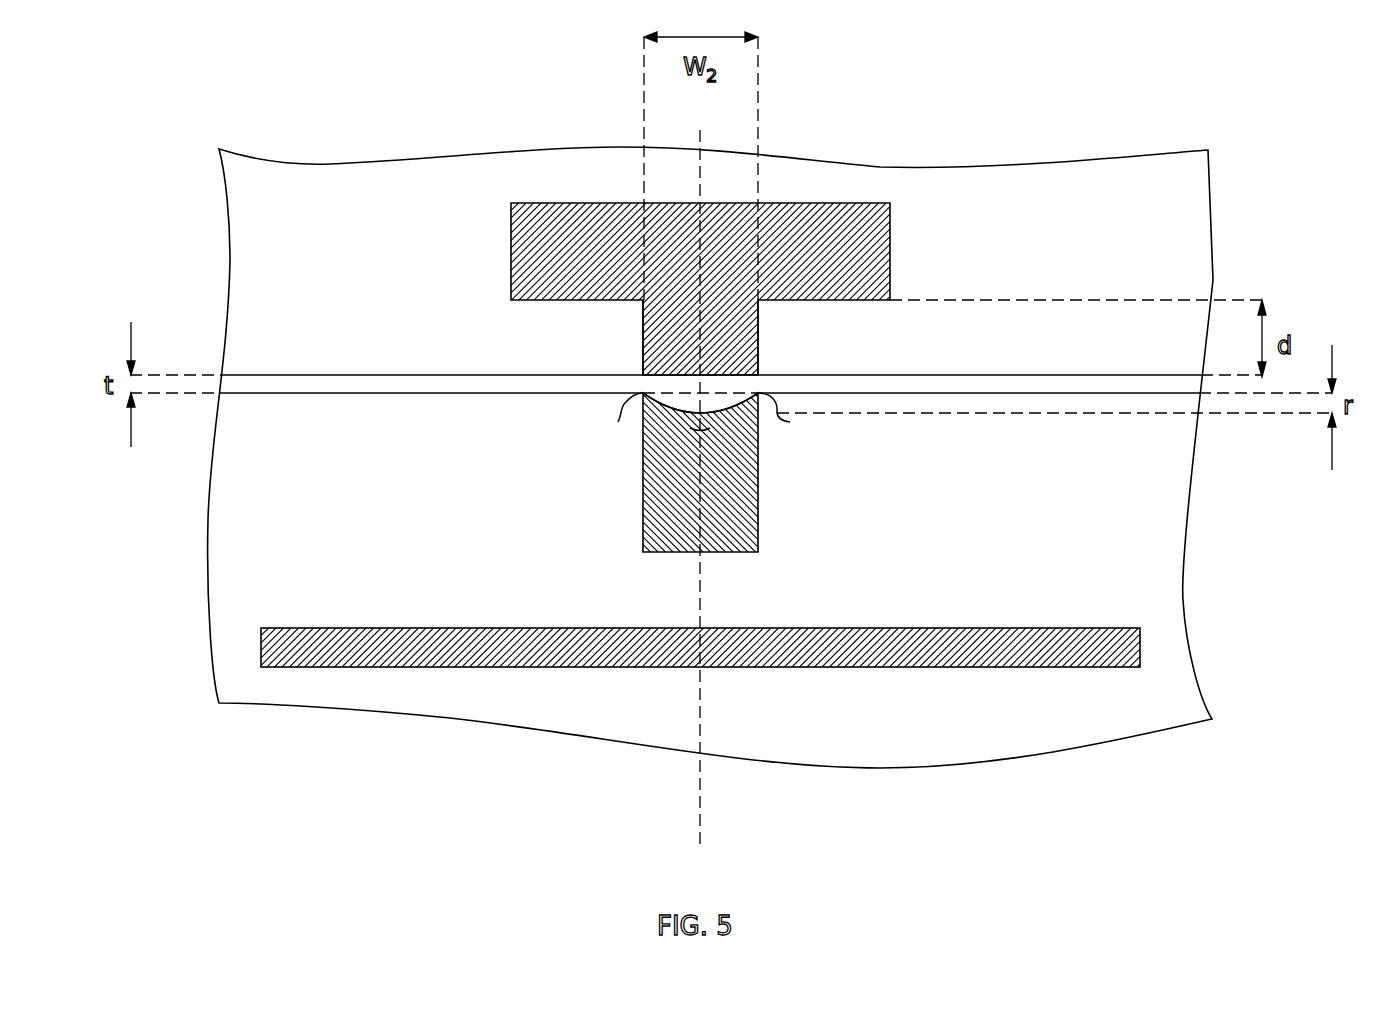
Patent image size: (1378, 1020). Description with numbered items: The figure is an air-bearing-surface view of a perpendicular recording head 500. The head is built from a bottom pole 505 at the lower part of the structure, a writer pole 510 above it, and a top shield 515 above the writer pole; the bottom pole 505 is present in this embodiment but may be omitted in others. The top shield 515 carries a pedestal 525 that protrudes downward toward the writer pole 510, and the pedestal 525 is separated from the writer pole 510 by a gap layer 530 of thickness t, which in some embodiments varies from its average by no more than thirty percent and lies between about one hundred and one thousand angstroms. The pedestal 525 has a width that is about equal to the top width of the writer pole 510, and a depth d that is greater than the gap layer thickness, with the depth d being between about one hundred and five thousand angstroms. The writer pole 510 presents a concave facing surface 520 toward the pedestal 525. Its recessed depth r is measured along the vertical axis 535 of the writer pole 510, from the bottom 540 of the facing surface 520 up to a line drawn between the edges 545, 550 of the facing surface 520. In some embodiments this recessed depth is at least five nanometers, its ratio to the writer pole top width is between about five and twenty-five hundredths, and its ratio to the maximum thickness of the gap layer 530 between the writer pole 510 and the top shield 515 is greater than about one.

The perpendicular recording head 500 is at (1133, 155).
The bottom pole 505 is at (261, 648).
The writer pole 510 is at (698, 472).
The top shield 515 is at (603, 203).
The concave facing surface 520 is at (737, 401).
The pedestal 525 is at (760, 343).
The gap layer 530 is at (220, 385).
The vertical axis 535 is at (705, 788).
The bottom of the facing surface 540 is at (700, 413).
The edge of the facing surface 545 is at (618, 422).
The edge of the facing surface 550 is at (790, 422).